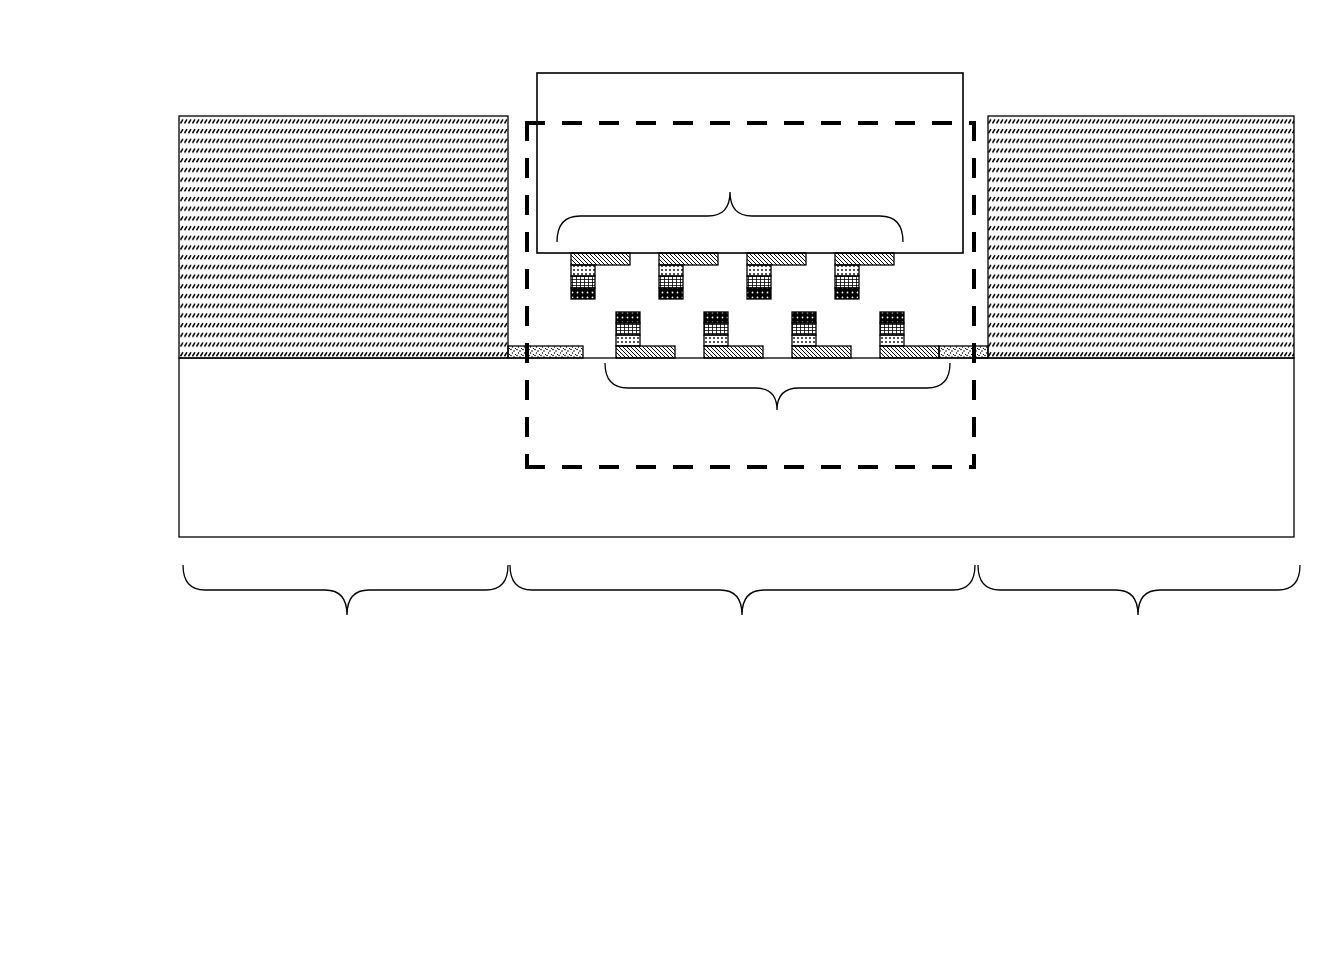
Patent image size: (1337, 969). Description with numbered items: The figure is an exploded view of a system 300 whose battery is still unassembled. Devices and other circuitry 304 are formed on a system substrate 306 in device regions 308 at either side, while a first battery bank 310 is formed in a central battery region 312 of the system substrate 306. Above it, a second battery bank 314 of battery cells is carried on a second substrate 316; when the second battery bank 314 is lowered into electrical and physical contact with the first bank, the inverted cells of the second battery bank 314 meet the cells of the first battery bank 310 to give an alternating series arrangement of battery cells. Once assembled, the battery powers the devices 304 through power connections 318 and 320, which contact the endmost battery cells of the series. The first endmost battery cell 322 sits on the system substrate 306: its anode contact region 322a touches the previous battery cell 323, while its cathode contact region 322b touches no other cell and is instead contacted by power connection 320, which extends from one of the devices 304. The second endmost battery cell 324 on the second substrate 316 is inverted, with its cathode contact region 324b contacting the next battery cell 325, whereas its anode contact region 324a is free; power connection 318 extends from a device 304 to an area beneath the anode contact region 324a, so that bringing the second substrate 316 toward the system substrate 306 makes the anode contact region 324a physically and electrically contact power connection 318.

The system 300 is at (978, 755).
The devices and other circuitry 304 is at (327, 112).
The system substrate 306 is at (736, 447).
The device regions 308 is at (741, 608).
The first battery bank 310 is at (796, 298).
The battery region 312 is at (743, 386).
The second battery bank 314 is at (725, 279).
The second substrate 316 is at (750, 163).
The power connection 318 is at (517, 365).
The power connection 320 is at (985, 370).
The first endmost battery cell 322 is at (917, 372).
The anode contact region 322a is at (893, 305).
The cathode contact region 322b is at (922, 337).
The previous battery cell 323 is at (838, 242).
The second endmost battery cell 324 is at (590, 240).
The anode contact region 324a is at (584, 302).
The cathode contact region 324b is at (615, 253).
The next battery cell 325 is at (643, 362).